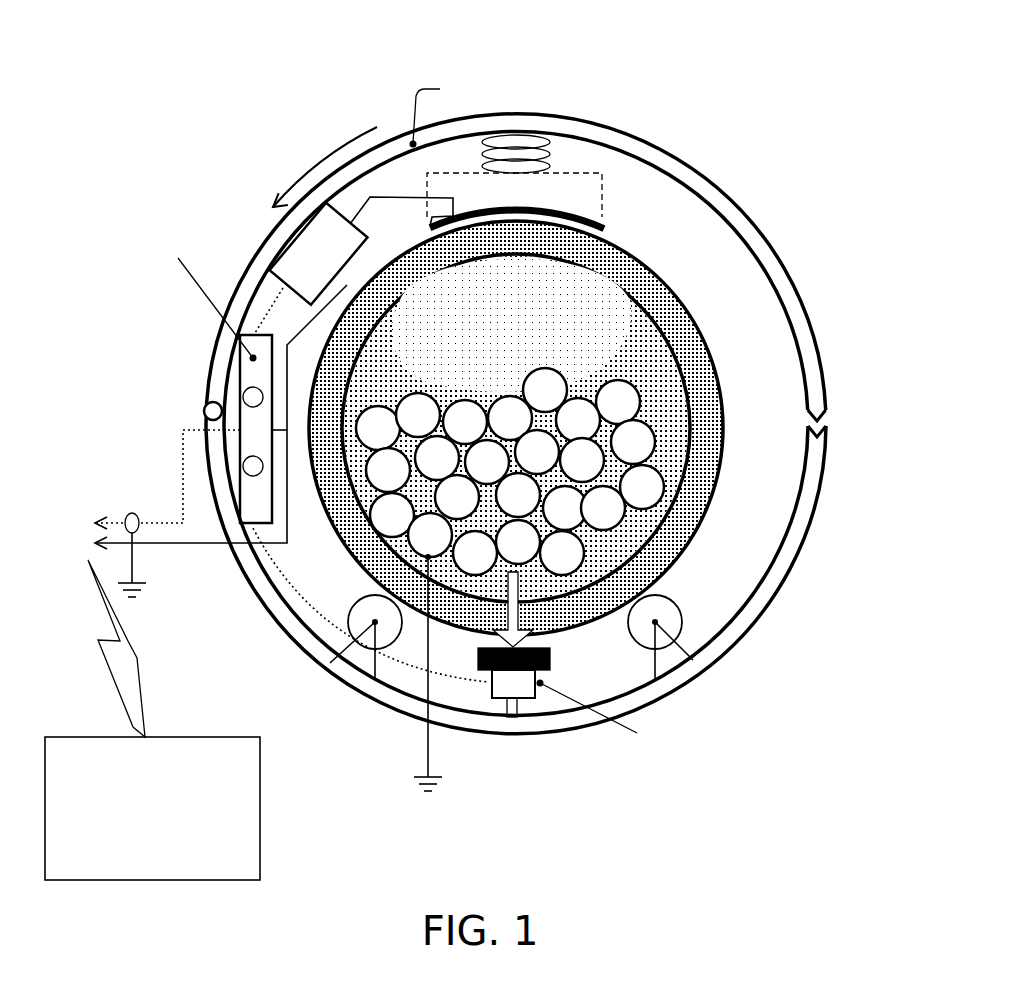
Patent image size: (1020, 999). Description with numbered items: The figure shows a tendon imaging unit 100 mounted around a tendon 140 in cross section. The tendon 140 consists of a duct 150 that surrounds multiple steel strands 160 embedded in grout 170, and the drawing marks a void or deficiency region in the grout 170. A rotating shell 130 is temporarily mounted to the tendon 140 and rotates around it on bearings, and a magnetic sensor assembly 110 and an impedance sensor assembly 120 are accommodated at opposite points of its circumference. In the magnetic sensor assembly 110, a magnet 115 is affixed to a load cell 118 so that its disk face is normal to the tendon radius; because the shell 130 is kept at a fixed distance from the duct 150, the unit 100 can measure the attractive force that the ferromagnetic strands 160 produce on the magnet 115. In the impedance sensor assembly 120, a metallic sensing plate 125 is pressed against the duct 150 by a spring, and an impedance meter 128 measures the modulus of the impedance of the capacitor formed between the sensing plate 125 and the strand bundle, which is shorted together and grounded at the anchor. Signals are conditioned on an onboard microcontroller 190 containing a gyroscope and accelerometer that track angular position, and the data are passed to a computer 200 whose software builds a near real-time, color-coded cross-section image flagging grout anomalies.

The tendon imaging unit 100 is at (611, 46).
The rotating shell 130 is at (583, 131).
The sensing plate 125 is at (622, 235).
The impedance sensor assembly 120 is at (414, 214).
The impedance meter 128 is at (281, 294).
The microcontroller 190 is at (178, 379).
The duct 150 is at (683, 333).
The tendon 140 is at (715, 360).
The grout 170 is at (676, 405).
The steel strands 160 is at (506, 504).
The magnetic sensor assembly 110 is at (580, 695).
The magnet 115 is at (582, 677).
The load cell 118 is at (525, 692).
The computer 200 is at (134, 847).